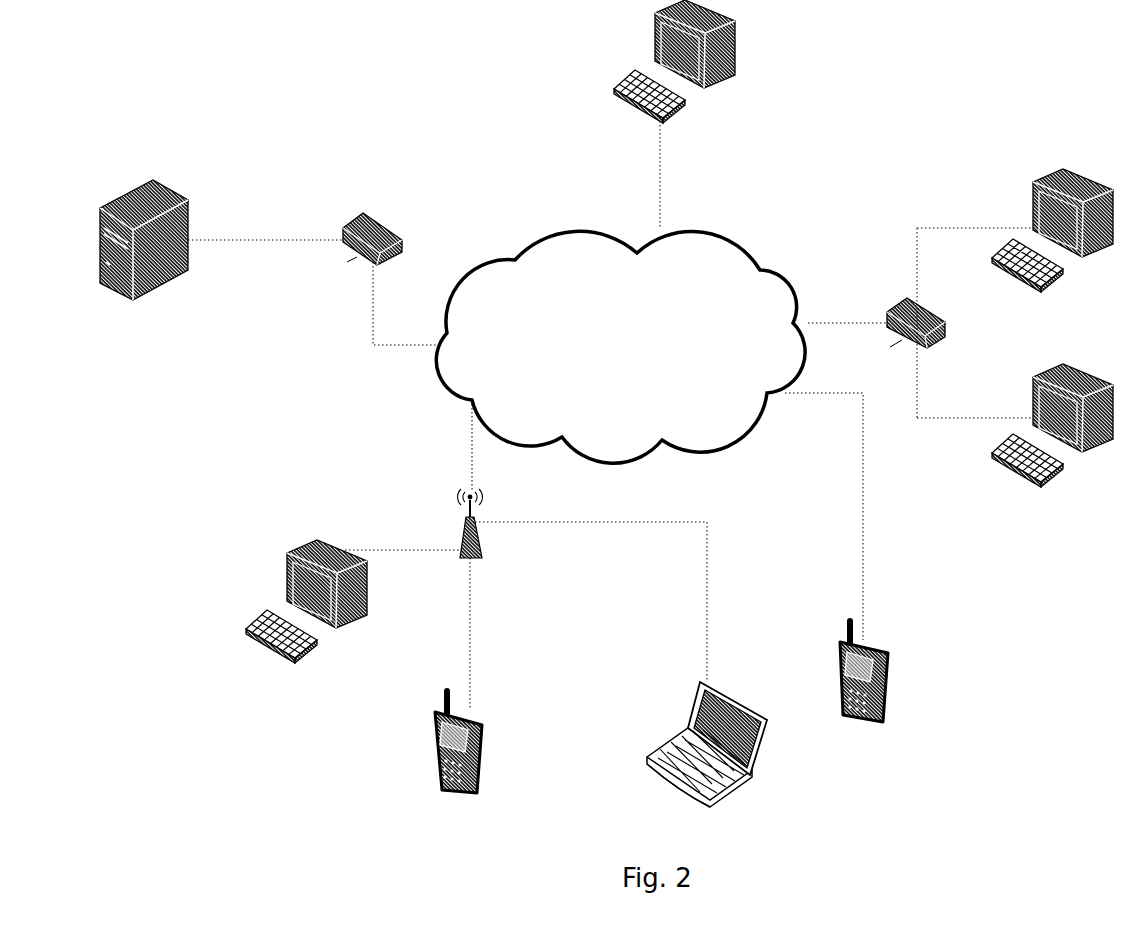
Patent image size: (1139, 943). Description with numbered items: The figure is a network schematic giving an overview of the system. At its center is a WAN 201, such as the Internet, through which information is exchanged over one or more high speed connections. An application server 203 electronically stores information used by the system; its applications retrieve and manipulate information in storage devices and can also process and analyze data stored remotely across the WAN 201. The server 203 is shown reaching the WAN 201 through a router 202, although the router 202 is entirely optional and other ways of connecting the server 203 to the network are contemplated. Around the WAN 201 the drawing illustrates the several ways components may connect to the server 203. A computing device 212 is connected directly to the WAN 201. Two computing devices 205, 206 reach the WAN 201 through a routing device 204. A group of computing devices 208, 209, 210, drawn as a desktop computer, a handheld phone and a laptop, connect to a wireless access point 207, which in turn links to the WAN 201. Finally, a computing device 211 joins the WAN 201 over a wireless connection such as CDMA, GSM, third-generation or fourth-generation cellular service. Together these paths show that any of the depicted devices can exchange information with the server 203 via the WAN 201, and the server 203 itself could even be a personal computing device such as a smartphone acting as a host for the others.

The WAN 201 is at (620, 360).
The router 202 is at (386, 250).
The application server 203 is at (153, 244).
The routing device 204 is at (907, 340).
The computing device 205 is at (1060, 230).
The computing device 206 is at (1057, 427).
The wireless access point 207 is at (492, 531).
The computing device 208 is at (306, 604).
The computing device 209 is at (469, 764).
The computing device 210 is at (711, 752).
The computing device 211 is at (880, 693).
The computing device 212 is at (683, 61).